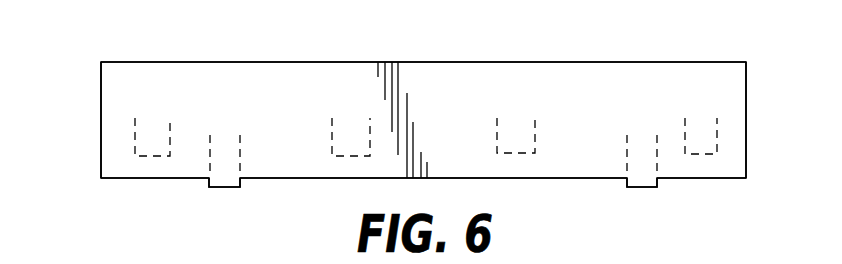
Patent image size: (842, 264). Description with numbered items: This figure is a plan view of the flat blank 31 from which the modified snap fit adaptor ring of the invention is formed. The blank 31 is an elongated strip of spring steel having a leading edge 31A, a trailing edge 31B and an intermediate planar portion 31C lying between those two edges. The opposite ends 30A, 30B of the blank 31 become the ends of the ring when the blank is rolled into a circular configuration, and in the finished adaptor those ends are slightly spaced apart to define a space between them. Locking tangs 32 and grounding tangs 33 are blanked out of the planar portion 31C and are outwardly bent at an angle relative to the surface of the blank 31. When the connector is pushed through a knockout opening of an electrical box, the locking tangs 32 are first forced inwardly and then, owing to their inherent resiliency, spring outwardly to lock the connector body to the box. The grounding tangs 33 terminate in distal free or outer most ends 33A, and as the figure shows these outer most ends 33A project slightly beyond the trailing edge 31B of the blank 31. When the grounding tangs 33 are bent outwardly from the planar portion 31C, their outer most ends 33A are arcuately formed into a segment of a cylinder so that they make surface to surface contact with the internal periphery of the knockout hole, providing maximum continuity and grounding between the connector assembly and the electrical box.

The blank 31 is at (218, 58).
The leading edge 31A is at (462, 62).
The trailing edge 31B is at (500, 178).
The intermediate planar portion 31C is at (352, 92).
The end of the adaptor 30A is at (101, 116).
The end of the adaptor 30B is at (746, 143).
The locking tang 32 is at (348, 148).
The grounding tang 33 is at (220, 148).
The outer most end of the grounding tang 33A is at (222, 188).